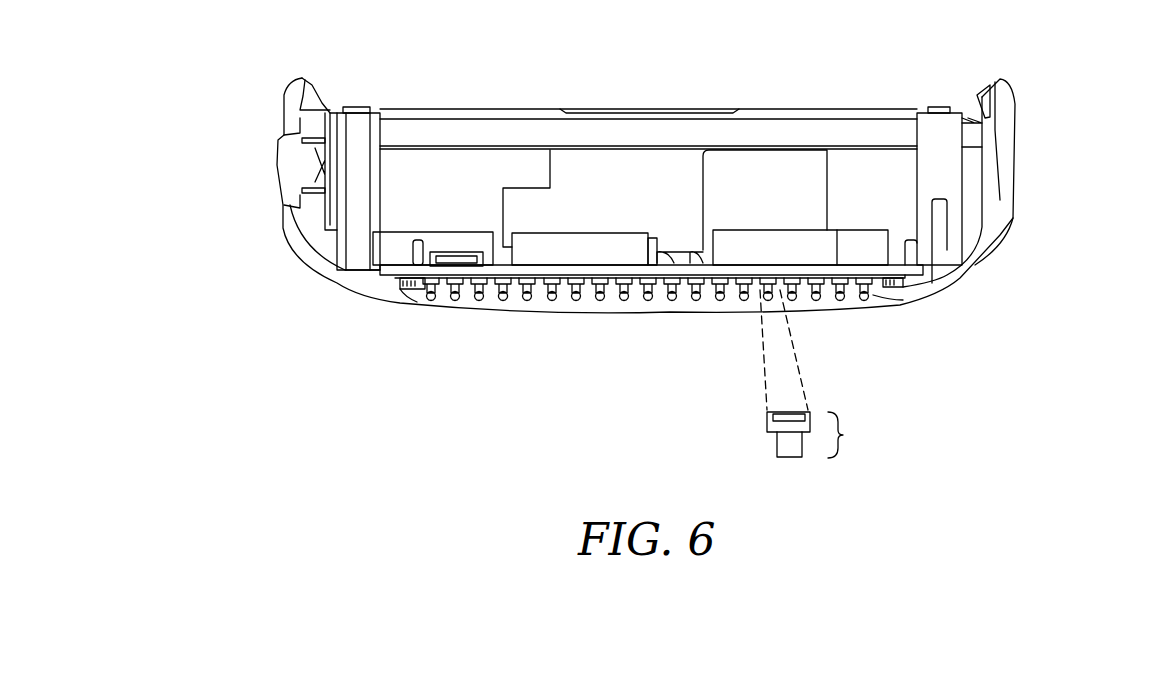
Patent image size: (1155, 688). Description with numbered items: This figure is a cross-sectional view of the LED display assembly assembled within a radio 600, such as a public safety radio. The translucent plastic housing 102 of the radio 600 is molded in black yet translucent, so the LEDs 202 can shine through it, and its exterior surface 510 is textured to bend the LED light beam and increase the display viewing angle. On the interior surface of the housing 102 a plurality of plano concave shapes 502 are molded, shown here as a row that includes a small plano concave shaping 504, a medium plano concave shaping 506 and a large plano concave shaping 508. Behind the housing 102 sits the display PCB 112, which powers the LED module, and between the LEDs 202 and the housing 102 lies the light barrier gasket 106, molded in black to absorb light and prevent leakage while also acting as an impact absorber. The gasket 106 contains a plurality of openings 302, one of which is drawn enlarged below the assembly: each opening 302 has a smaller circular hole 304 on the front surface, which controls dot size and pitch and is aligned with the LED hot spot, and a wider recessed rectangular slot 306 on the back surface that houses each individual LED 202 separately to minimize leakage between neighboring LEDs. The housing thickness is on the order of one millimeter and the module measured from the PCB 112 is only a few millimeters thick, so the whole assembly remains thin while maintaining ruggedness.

The radio 600 is at (1130, 364).
The translucent plastic housing 102 is at (947, 283).
The exterior surface 510 is at (980, 257).
The display PCB 112 is at (380, 270).
The light barrier gasket 106 is at (416, 293).
The plano concave shapes 502 is at (480, 301).
The small plano concave shaping 504 is at (552, 301).
The medium plano concave shaping 506 is at (576, 301).
The large plano concave shaping 508 is at (598, 301).
The openings 302 is at (798, 369).
The hole 304 is at (767, 420).
The slot 306 is at (777, 447).
The LEDs 202 is at (793, 417).